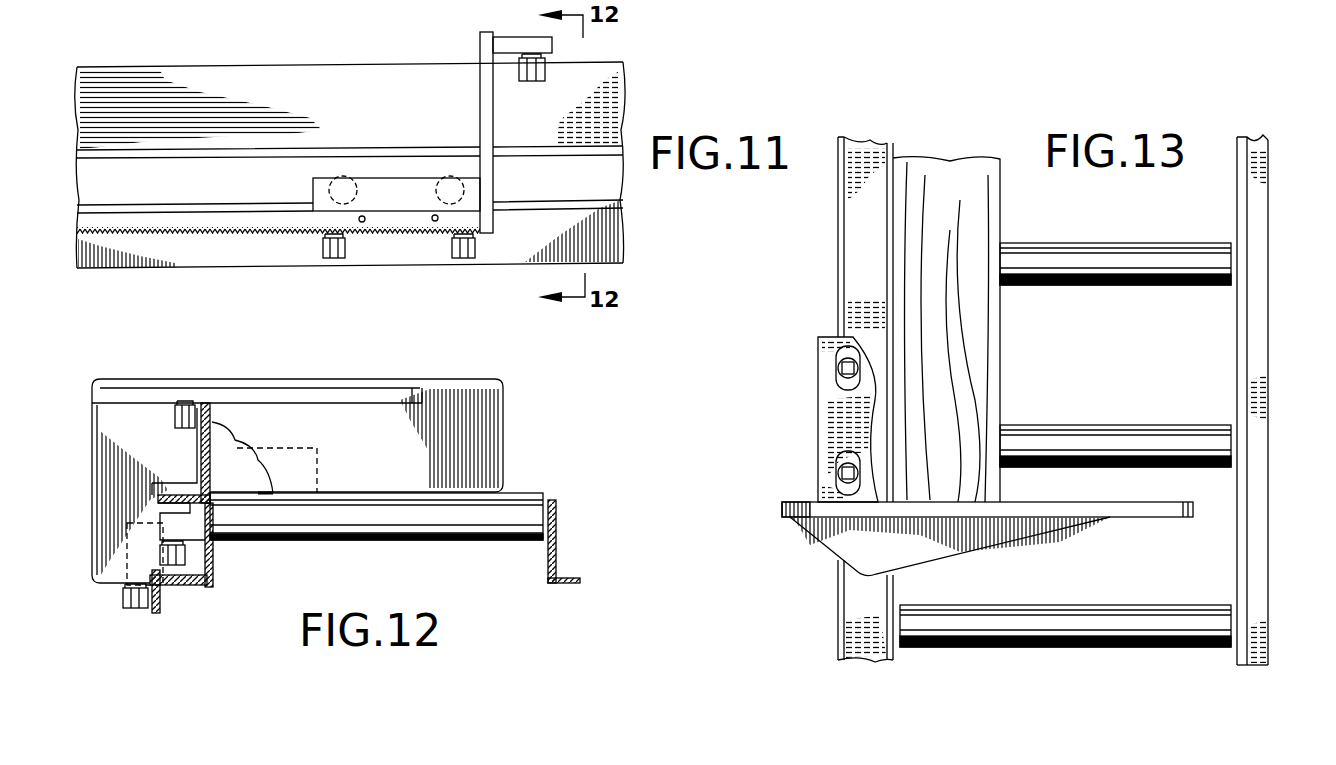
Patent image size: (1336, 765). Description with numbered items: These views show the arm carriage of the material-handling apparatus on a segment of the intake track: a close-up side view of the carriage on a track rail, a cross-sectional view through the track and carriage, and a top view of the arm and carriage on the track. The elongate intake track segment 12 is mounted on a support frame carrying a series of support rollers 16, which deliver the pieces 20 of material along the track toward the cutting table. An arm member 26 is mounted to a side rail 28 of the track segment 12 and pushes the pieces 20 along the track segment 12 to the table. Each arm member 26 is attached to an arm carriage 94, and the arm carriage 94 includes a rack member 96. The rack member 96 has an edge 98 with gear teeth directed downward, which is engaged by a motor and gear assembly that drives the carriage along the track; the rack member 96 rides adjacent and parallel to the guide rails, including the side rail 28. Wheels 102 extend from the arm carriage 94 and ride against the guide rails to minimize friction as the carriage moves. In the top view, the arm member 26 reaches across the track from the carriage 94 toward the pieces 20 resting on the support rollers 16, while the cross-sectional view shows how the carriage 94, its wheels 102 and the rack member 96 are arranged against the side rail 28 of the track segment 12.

In FIG. 13, the intake track segment 12 is at (1258, 362).
In FIG. 12, the support rollers 16 is at (447, 520).
In FIG. 13, the support rollers 16 is at (1087, 243).
In FIG. 12, the pieces of material 20 is at (232, 470).
In FIG. 13, the pieces of material 20 is at (962, 323).
In FIG. 12, the arm member 26 is at (503, 418).
In FIG. 13, the arm member 26 is at (1155, 517).
In FIG. 11, the side rail 28 is at (278, 67).
In FIG. 13, the side rail 28 is at (890, 598).
In FIG. 11, the arm carriage 94 is at (440, 60).
In FIG. 12, the arm carriage 94 is at (556, 457).
In FIG. 13, the arm carriage 94 is at (740, 451).
In FIG. 11, the rack member 96 is at (208, 218).
In FIG. 13, the rack member 96 is at (889, 141).
In FIG. 11, the edge with gear teeth 98 is at (405, 233).
In FIG. 11, the wheels 102 is at (452, 176).
In FIG. 12, the wheels 102 is at (173, 412).
In FIG. 13, the wheels 102 is at (836, 370).